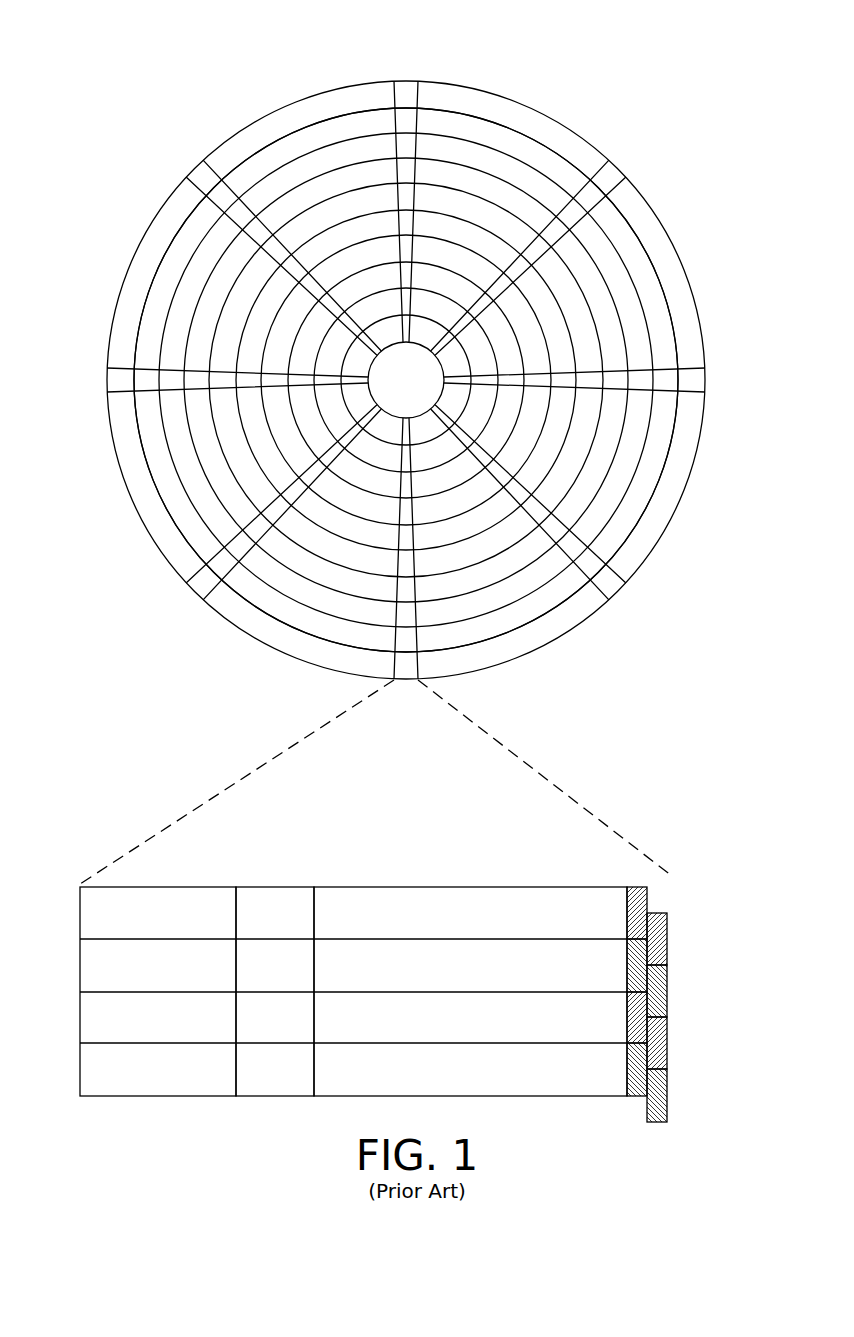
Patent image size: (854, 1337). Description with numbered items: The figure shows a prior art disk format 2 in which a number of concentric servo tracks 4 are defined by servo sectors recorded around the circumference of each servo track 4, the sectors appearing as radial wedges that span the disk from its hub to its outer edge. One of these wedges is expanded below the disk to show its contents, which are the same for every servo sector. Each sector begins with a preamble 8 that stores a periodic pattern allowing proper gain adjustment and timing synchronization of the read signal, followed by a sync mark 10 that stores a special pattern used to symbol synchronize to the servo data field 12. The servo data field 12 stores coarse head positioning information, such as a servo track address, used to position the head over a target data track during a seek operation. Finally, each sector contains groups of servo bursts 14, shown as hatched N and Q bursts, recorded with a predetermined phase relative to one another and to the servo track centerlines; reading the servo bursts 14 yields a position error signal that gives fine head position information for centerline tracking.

The disk format 2 is at (186, 85).
The servo track 4 is at (508, 138).
The preamble 8 is at (165, 887).
The sync mark 10 is at (277, 887).
The servo data field 12 is at (460, 887).
The servo bursts 14 is at (658, 887).